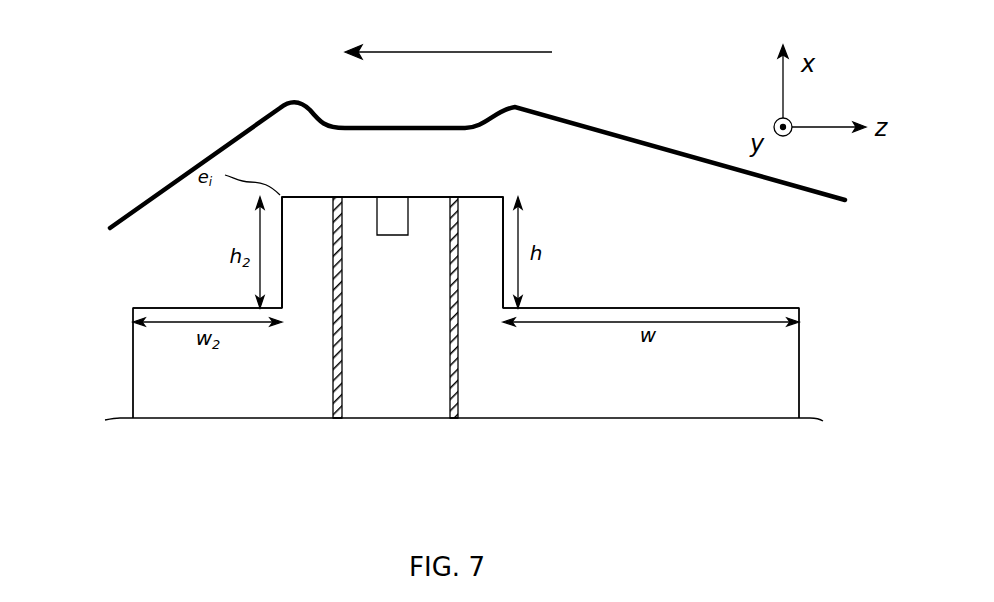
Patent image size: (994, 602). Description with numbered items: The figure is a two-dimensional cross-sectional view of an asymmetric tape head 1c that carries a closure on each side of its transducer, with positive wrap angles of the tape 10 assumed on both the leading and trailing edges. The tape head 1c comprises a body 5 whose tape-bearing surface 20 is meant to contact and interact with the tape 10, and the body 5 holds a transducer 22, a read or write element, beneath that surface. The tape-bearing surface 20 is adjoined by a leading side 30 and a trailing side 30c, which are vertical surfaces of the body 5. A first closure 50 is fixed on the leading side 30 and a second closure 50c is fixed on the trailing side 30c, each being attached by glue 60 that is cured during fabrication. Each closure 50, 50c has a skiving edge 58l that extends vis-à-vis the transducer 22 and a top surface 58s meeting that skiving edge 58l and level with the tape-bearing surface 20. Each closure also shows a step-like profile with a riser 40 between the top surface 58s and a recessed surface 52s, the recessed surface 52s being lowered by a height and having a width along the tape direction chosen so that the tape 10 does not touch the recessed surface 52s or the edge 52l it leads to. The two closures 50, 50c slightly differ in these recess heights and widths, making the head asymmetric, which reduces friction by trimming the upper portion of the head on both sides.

The tape 10 is at (595, 124).
The tape-bearing surface 20 is at (362, 197).
The transducer 22 is at (400, 235).
The leading side 30 is at (458, 355).
The trailing side 30c is at (333, 352).
The riser 40 is at (289, 237).
The first closure 50 is at (750, 379).
The second closure 50c is at (148, 378).
The recessed surface 52s is at (222, 306).
The edge 52l is at (800, 302).
The top surface 58s is at (313, 197).
The skiving edge 58l is at (503, 197).
The glue 60 is at (336, 420).
The body 5 is at (400, 420).
The tape head 1c is at (658, 468).